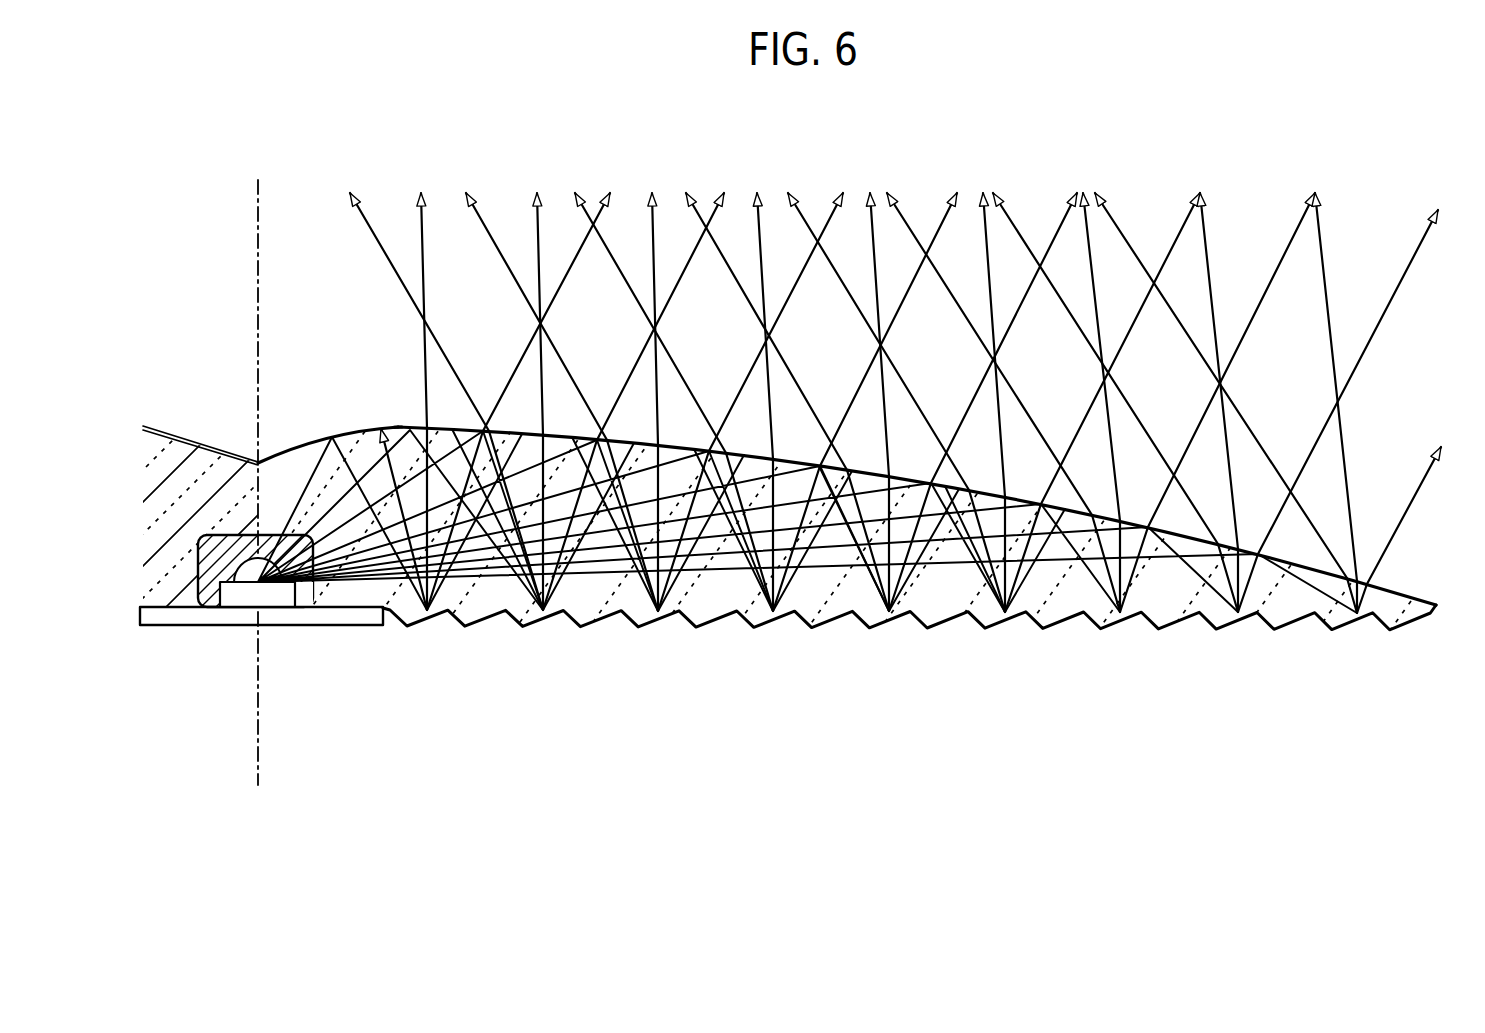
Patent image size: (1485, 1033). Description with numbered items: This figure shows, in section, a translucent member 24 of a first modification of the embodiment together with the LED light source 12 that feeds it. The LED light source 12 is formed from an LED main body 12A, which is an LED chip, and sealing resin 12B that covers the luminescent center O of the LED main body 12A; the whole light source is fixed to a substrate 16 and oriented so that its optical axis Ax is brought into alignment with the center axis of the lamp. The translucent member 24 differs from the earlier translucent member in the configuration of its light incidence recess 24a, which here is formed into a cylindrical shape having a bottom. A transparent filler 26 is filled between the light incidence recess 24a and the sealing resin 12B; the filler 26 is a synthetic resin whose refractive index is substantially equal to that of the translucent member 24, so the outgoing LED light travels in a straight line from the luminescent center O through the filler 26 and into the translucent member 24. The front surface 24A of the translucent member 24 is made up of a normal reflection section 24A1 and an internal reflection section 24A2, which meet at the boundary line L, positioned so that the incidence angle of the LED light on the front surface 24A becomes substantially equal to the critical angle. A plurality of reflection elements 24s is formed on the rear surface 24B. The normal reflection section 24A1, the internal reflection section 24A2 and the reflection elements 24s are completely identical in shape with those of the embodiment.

The translucent member 24 is at (745, 525).
The front surface 24A is at (789, 466).
The normal reflection section 24A1 is at (320, 430).
The internal reflection section 24A2 is at (657, 443).
The rear surface 24B is at (909, 663).
The reflection elements 24s is at (947, 627).
The light incidence recess 24a is at (258, 533).
The transparent filler 26 is at (220, 534).
The LED light source 12 is at (252, 627).
The LED main body 12A is at (242, 608).
The sealing resin 12B is at (185, 608).
The substrate 16 is at (297, 629).
The luminescent center O is at (262, 606).
The boundary line L is at (398, 426).
The optical axis Ax is at (258, 247).